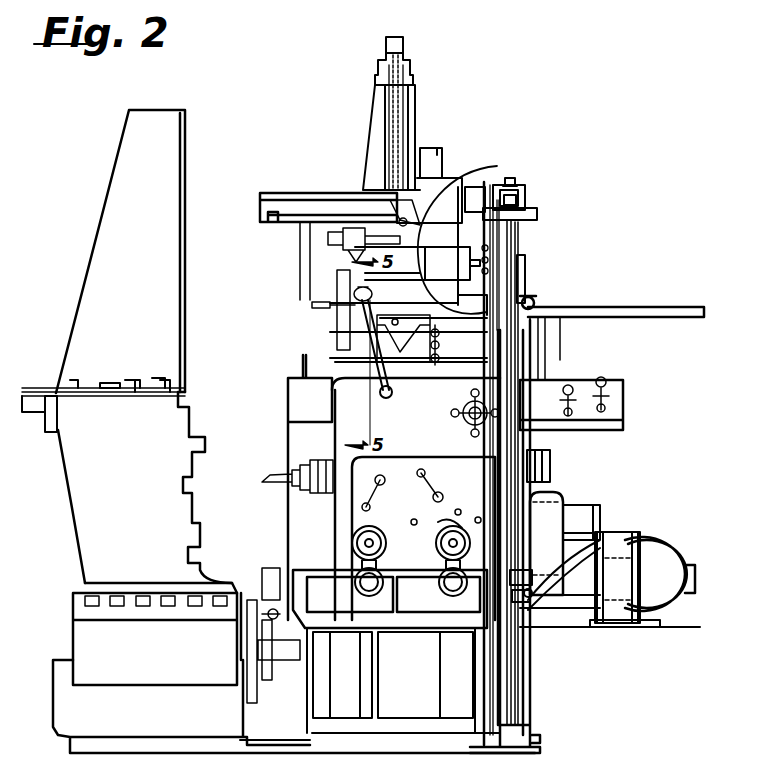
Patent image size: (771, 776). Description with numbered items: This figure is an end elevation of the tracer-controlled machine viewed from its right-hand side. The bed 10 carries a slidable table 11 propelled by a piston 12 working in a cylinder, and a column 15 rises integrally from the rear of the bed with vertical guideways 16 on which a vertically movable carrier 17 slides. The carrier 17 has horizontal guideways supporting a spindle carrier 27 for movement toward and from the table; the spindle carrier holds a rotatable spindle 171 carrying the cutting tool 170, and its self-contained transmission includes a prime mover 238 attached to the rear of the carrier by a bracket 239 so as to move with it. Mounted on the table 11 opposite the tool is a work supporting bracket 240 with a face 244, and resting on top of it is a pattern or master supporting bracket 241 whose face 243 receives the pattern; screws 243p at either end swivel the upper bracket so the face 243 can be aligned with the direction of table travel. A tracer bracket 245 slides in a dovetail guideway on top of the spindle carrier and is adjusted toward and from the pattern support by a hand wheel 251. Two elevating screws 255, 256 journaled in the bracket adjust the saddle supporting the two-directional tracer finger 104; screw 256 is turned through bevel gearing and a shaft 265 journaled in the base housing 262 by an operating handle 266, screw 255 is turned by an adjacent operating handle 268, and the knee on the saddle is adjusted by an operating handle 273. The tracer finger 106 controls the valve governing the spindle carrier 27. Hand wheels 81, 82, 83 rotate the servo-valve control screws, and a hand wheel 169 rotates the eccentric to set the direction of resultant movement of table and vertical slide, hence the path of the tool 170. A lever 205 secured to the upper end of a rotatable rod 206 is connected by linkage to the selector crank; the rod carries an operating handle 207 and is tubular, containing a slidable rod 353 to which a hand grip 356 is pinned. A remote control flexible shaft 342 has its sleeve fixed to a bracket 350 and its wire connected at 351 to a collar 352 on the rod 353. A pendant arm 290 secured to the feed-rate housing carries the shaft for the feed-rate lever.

The bed 10 is at (58, 696).
The table 11 is at (75, 610).
The piston 12 is at (530, 548).
The column 15 is at (503, 692).
The vertical guideways 16 is at (450, 688).
The vertically movable carrier 17 is at (286, 399).
The spindle carrier 27 is at (333, 431).
The hand wheel 81 is at (280, 568).
The hand wheel 82 is at (372, 530).
The hand wheel 83 is at (460, 522).
The tracer finger 104 is at (315, 302).
The tracer finger 106 is at (327, 238).
The hand wheel 169 is at (355, 290).
The cutting tool 170 is at (280, 472).
The rotatable spindle 171 is at (312, 488).
The lever 205 is at (538, 214).
The rotatable rod 206 is at (514, 239).
The operating handle 207 is at (528, 605).
The prime mover 238 is at (668, 562).
The bracket 239 is at (642, 545).
The work supporting bracket 240 is at (72, 490).
The pattern or master supporting bracket 241 is at (86, 288).
The face 243 is at (186, 277).
The screws 243p is at (145, 378).
The face 244 is at (195, 500).
The tracer bracket 245 is at (376, 104).
The hand wheel 251 is at (500, 452).
The elevating screw 255 is at (400, 126).
The elevating screw 256 is at (386, 140).
The base housing 262 is at (580, 382).
The shaft 265 is at (575, 378).
The operating handle 266 is at (580, 430).
The operating handle 268 is at (606, 380).
The operating handle 273 is at (437, 368).
The pendant arm 290 is at (355, 332).
The remote control flexible shaft 342 is at (526, 265).
The fixed bracket 350 is at (491, 185).
The wire connection 351 is at (504, 188).
The collar 352 is at (526, 202).
The rod 353 is at (522, 186).
The hand grip 356 is at (585, 627).